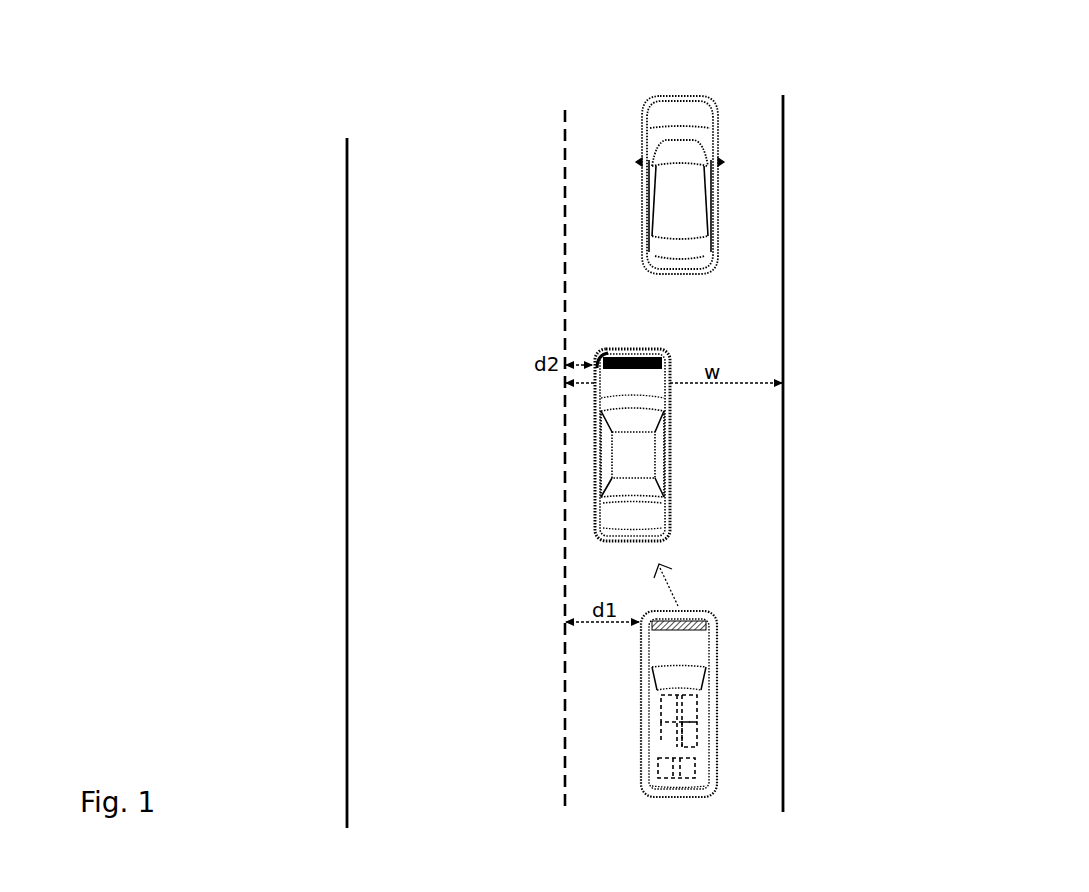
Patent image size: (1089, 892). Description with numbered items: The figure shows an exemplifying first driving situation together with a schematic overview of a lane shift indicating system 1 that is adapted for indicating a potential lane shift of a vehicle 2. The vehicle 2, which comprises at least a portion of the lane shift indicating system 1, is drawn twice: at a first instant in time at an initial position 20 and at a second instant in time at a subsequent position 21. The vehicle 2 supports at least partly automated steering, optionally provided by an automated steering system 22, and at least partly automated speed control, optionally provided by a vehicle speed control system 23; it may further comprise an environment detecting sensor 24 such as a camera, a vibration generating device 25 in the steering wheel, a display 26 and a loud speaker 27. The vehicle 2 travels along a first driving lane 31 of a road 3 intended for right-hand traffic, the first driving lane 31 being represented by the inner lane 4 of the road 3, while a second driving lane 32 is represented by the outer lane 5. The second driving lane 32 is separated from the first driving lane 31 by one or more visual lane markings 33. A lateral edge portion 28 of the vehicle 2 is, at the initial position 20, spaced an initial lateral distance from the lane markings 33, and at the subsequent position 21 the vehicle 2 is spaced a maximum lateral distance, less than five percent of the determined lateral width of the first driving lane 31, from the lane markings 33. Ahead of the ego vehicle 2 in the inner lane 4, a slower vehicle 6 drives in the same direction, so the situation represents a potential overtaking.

The lane shift indicating system 1 is at (871, 682).
The vehicle 2 is at (709, 562).
The road 3 is at (318, 430).
The inner lane 4 is at (823, 453).
The outer lane 5 is at (322, 483).
The slower vehicle 6 is at (735, 240).
The initial position 20 is at (709, 709).
The subsequent position 21 is at (684, 514).
The automated steering system 22 is at (663, 707).
The vehicle speed control system 23 is at (661, 738).
The environment detecting sensor 24 is at (659, 765).
The vibration generating device 25 is at (696, 707).
The display 26 is at (696, 738).
The loud speaker 27 is at (696, 765).
The lateral edge portion 28 is at (597, 364).
The first driving lane 31 is at (755, 583).
The second driving lane 32 is at (380, 586).
The lane markings 33 is at (560, 206).